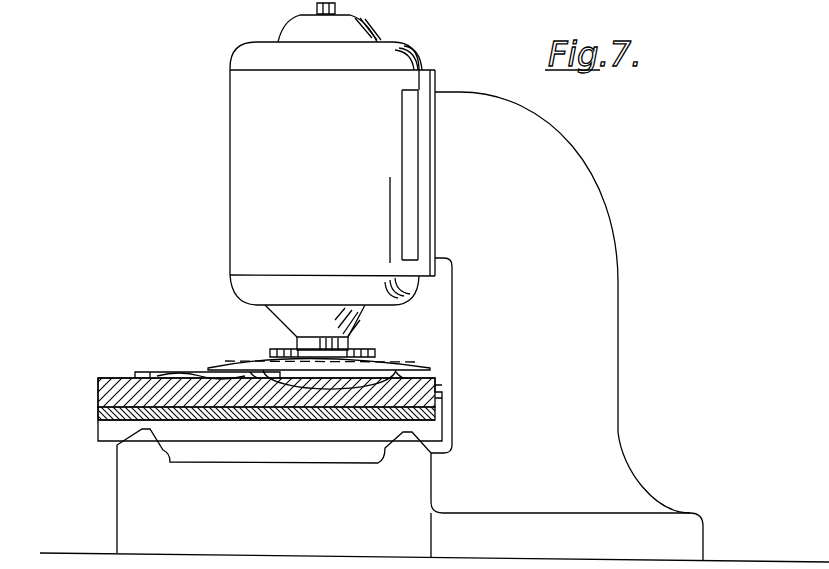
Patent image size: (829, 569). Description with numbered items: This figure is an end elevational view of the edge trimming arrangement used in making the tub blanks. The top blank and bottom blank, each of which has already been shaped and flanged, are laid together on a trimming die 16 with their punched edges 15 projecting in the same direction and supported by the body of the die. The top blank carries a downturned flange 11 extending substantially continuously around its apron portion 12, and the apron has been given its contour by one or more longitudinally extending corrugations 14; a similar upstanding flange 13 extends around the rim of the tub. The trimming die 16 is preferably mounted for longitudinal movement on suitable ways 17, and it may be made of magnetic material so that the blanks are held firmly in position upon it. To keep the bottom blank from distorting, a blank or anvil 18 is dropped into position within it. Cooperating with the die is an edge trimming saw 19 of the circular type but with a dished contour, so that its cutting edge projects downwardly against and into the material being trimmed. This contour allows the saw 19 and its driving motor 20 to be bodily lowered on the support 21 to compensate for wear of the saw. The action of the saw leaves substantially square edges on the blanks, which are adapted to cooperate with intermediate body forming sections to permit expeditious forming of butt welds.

The downturned flange 11 is at (133, 373).
The apron portion 12 is at (150, 372).
The upstanding flange 13 is at (433, 382).
The longitudinally extending corrugations 14 is at (200, 373).
The punched edge 15 is at (264, 376).
The trimming die 16 is at (115, 393).
The ways 17 is at (140, 443).
The anvil 18 is at (380, 356).
The edge trimming saw 19 is at (248, 356).
The driving motor 20 is at (238, 172).
The support 21 is at (603, 280).